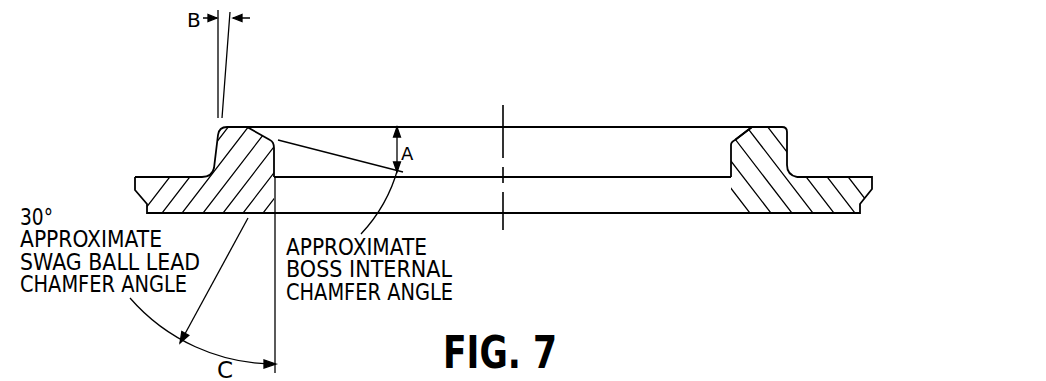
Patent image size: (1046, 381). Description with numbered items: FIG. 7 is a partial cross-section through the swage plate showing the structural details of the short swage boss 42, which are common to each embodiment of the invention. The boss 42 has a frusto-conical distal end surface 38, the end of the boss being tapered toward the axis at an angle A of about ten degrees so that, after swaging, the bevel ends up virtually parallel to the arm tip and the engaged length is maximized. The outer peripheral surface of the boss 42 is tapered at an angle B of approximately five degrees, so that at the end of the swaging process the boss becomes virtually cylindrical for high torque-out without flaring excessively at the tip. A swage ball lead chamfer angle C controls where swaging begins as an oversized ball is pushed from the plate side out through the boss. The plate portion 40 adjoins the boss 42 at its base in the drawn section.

The frusto-conical distal end surface 38 is at (740, 128).
The flange 40 is at (832, 214).
The swage boss 42 is at (787, 151).